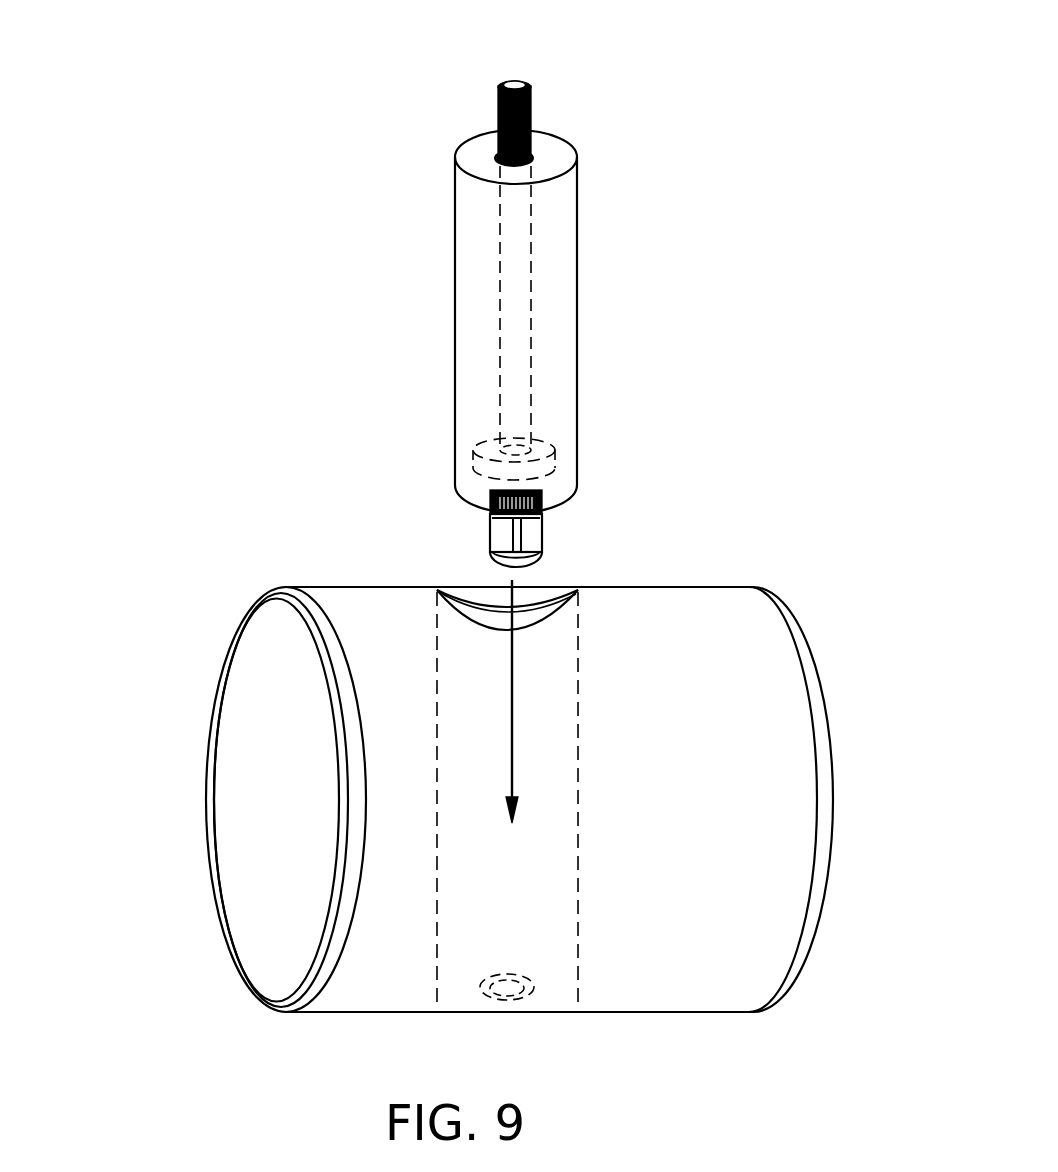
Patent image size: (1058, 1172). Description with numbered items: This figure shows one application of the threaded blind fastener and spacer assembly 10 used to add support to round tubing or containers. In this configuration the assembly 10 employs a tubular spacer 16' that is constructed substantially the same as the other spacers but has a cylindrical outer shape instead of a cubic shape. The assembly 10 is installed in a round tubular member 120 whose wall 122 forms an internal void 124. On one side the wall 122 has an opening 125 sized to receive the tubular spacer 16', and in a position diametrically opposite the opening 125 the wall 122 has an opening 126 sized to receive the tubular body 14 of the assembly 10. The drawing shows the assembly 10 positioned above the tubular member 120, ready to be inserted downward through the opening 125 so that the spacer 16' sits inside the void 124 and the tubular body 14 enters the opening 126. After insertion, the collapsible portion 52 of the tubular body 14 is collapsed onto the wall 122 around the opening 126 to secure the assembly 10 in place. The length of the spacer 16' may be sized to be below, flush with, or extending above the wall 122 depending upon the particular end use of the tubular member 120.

The threaded blind fastener and spacer assembly 10 is at (612, 110).
The tubular spacer 16' is at (580, 297).
The collapsible portion 52 is at (490, 513).
The tubular body 14 is at (530, 531).
The round tubular member 120 is at (703, 545).
The wall 122 is at (273, 594).
The internal void 124 is at (290, 840).
The opening 125 is at (435, 580).
The opening 126 is at (530, 975).